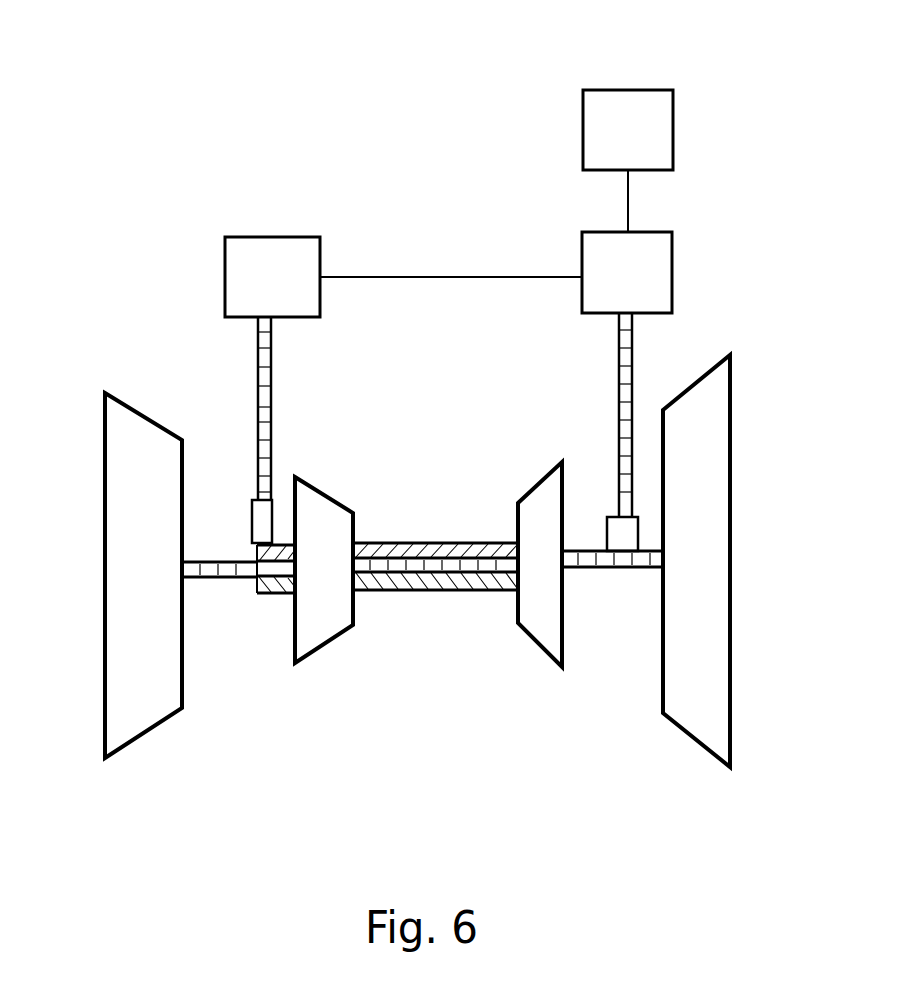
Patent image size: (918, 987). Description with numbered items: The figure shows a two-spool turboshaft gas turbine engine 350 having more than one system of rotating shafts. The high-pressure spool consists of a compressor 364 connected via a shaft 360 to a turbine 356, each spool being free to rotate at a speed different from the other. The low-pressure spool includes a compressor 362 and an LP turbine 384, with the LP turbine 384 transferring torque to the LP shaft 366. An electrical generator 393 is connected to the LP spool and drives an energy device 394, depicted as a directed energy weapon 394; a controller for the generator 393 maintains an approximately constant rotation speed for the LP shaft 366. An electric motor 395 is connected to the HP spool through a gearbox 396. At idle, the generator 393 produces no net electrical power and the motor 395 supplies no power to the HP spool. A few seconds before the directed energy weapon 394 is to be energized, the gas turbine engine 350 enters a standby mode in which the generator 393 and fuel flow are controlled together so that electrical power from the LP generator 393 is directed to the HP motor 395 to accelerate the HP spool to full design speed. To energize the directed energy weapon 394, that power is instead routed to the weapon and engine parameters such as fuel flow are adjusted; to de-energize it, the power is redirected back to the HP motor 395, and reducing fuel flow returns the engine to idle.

The gas turbine engine 350 is at (383, 145).
The turbine 356 is at (535, 645).
The shaft 360 is at (267, 593).
The compressor 362 is at (138, 738).
The compressor 364 is at (330, 640).
The LP shaft 366 is at (440, 567).
The LP turbine 384 is at (730, 625).
The electrical generator 393 is at (610, 284).
The directed energy weapon 394 is at (611, 142).
The electric motor 395 is at (255, 287).
The gearbox 396 is at (253, 503).